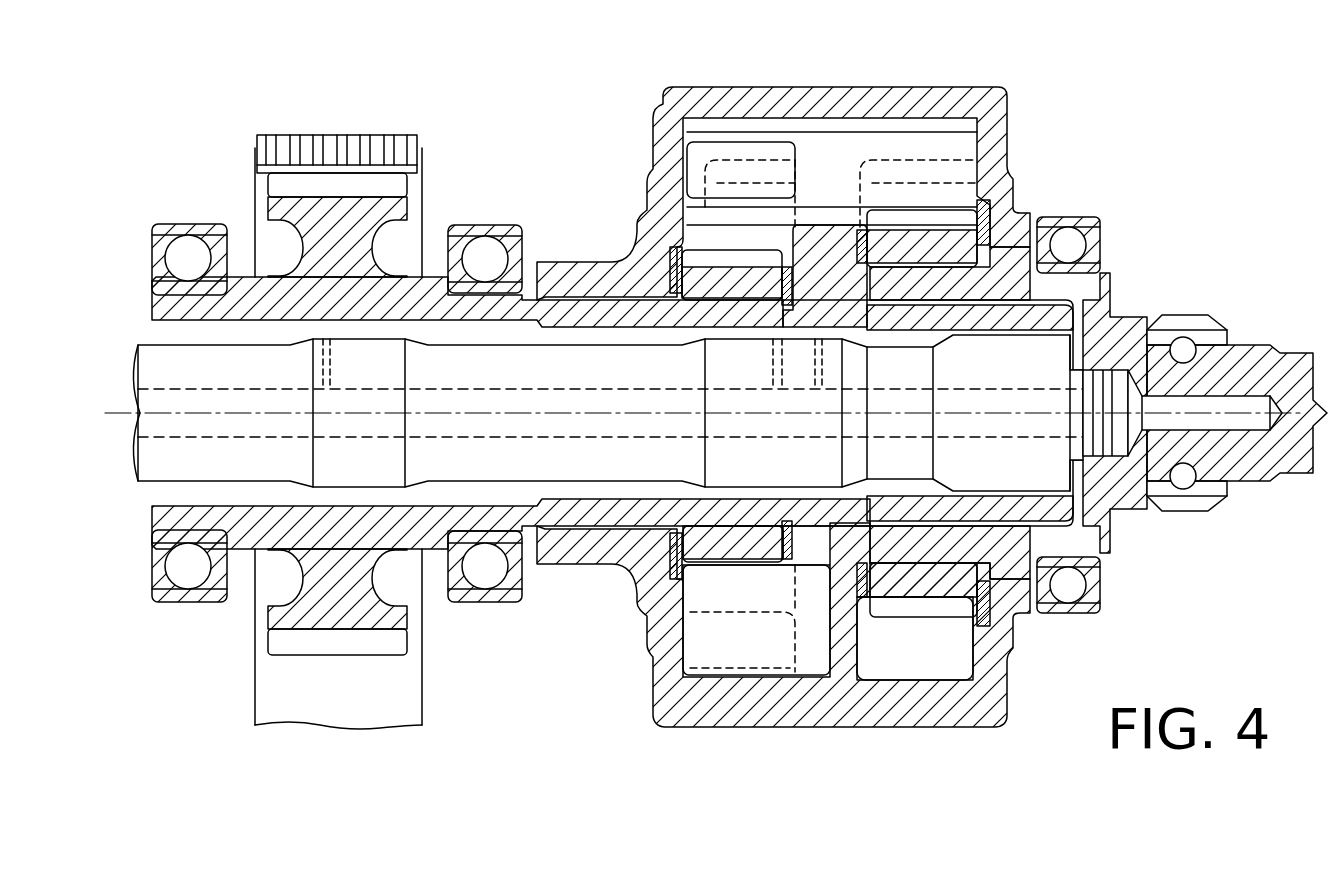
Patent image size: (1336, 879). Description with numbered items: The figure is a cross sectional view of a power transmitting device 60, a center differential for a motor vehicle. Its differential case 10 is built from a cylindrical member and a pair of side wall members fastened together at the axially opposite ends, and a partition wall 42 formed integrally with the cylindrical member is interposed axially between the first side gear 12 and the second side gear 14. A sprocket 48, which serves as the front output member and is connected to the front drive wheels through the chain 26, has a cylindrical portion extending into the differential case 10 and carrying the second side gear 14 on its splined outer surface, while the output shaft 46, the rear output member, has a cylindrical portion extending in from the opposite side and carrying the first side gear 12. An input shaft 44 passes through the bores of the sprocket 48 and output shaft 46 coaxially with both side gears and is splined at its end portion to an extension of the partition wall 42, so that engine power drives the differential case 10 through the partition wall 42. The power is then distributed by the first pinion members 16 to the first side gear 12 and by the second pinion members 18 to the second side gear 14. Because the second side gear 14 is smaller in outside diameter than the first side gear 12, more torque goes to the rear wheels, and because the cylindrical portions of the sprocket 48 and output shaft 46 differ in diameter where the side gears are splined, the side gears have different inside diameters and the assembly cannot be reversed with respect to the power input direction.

The differential case 10 is at (659, 66).
The first side gear 12 is at (931, 587).
The second side gear 14 is at (715, 548).
The first pinion members 16 is at (918, 150).
The second pinion members 18 is at (761, 640).
The chain 26 is at (265, 680).
The partition wall 42 is at (820, 240).
The input shaft 44 is at (137, 367).
The output shaft 46 is at (1257, 363).
The sprocket 48 is at (333, 618).
The power transmitting device 60 is at (1104, 117).